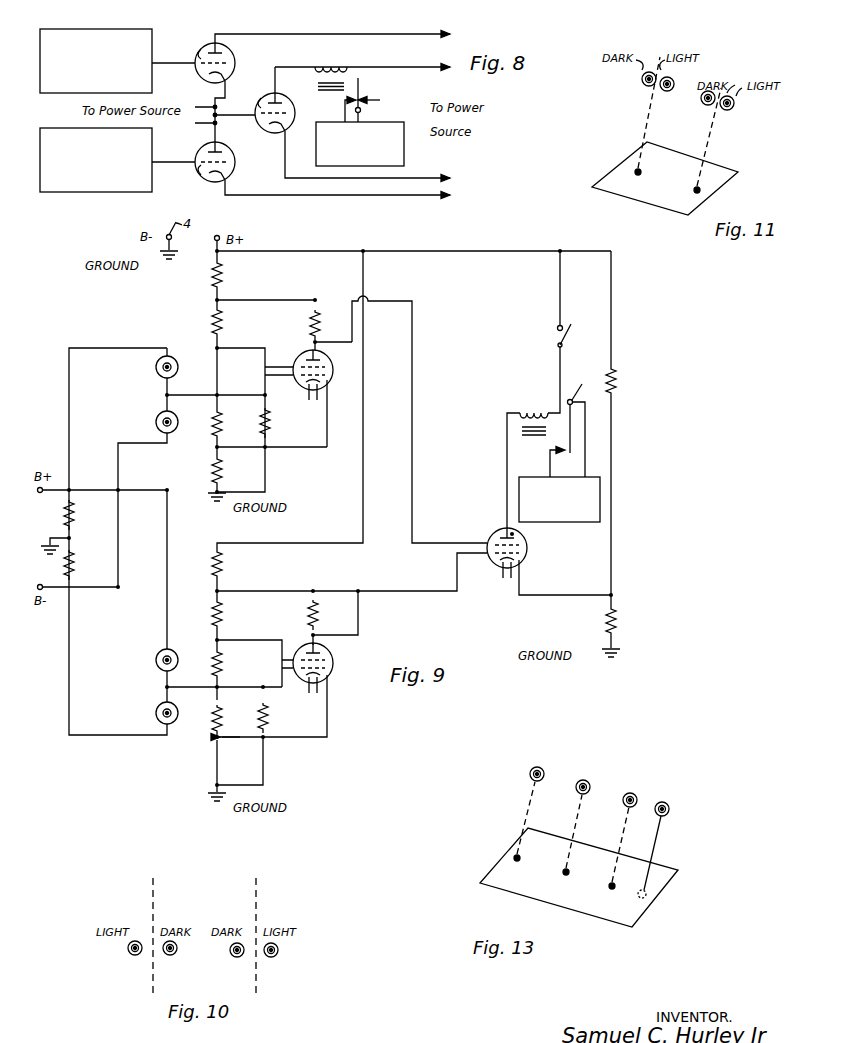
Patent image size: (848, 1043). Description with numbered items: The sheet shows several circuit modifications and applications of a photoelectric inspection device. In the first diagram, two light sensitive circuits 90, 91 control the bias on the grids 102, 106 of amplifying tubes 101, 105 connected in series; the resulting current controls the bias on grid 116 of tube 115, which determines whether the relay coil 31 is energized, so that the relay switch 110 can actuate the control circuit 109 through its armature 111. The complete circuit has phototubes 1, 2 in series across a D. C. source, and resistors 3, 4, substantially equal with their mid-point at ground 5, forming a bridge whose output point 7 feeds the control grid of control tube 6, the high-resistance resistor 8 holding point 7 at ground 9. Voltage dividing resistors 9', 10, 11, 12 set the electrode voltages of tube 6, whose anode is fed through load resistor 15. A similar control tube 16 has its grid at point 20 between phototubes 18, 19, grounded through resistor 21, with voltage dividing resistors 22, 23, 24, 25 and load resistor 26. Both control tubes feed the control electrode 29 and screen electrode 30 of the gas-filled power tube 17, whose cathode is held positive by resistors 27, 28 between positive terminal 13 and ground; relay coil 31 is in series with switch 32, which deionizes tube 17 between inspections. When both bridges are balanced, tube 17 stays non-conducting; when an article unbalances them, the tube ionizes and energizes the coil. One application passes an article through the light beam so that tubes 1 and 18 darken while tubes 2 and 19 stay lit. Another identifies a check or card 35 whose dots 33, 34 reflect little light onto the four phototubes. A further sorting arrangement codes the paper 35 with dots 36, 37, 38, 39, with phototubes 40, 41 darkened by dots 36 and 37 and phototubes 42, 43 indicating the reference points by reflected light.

In FIG. 8, the light sensitive circuit 90 is at (132, 29).
In FIG. 8, the light sensitive circuit 91 is at (79, 190).
In FIG. 8, the amplifying tube 101 is at (234, 54).
In FIG. 8, the grid 102 is at (201, 49).
In FIG. 8, the amplifying tube 105 is at (231, 167).
In FIG. 8, the grid 106 is at (200, 171).
In FIG. 8, the tube 115 is at (292, 107).
In FIG. 8, the grid 116 is at (261, 99).
In FIG. 8, the relay coil 31 is at (337, 50).
In FIG. 9, the relay coil 31 is at (539, 398).
In FIG. 8, the relay switch 110 is at (364, 108).
In FIG. 9, the relay switch 110 is at (574, 393).
In FIG. 8, the control circuit 109 is at (316, 148).
In FIG. 9, the control circuit 109 is at (552, 528).
In FIG. 9, the relay armature 111 is at (547, 452).
In FIG. 9, the positive terminal 13 is at (215, 238).
In FIG. 9, the resistor 4 is at (72, 565).
In FIG. 9, the voltage dividing resistor 9' is at (230, 276).
In FIG. 9, the voltage dividing resistor 10 is at (221, 325).
In FIG. 9, the phototube 1 is at (177, 361).
In FIG. 11, the phototube 1 is at (642, 86).
In FIG. 10, the phototube 1 is at (167, 955).
In FIG. 9, the phototube 2 is at (177, 423).
In FIG. 11, the phototube 2 is at (667, 91).
In FIG. 10, the phototube 2 is at (132, 956).
In FIG. 9, the point 7 is at (169, 395).
In FIG. 9, the voltage dividing resistor 11 is at (221, 420).
In FIG. 9, the resistor 8 is at (269, 420).
In FIG. 9, the voltage dividing resistor 12 is at (220, 464).
In FIG. 9, the ground 9 is at (205, 495).
In FIG. 9, the resistor 3 is at (72, 516).
In FIG. 9, the ground 5 is at (51, 539).
In FIG. 9, the load resistor 15 is at (318, 323).
In FIG. 9, the control tube 6 is at (325, 354).
In FIG. 9, the voltage dividing resistor 22 is at (220, 566).
In FIG. 9, the voltage dividing resistor 23 is at (220, 616).
In FIG. 9, the voltage dividing resistor 24 is at (220, 665).
In FIG. 9, the load resistor 26 is at (317, 613).
In FIG. 9, the control tube 16 is at (325, 654).
In FIG. 9, the voltage dividing resistor 25 is at (220, 722).
In FIG. 9, the resistor 21 is at (271, 717).
In FIG. 9, the phototube 18 is at (175, 656).
In FIG. 11, the phototube 18 is at (705, 105).
In FIG. 10, the phototube 18 is at (230, 957).
In FIG. 9, the point 20 is at (169, 687).
In FIG. 9, the phototube 19 is at (175, 709).
In FIG. 11, the phototube 19 is at (727, 110).
In FIG. 10, the phototube 19 is at (267, 957).
In FIG. 9, the switch 32 is at (555, 334).
In FIG. 9, the voltage dividing resistor 27 is at (614, 383).
In FIG. 9, the voltage dividing resistor 28 is at (614, 622).
In FIG. 9, the power tube 17 is at (501, 523).
In FIG. 9, the screen electrode 30 is at (492, 538).
In FIG. 9, the control electrode 29 is at (492, 565).
In FIG. 11, the dot 33 is at (636, 176).
In FIG. 11, the dot 34 is at (695, 194).
In FIG. 11, the article 35 is at (664, 191).
In FIG. 13, the article 35 is at (553, 861).
In FIG. 13, the dot 36 is at (517, 862).
In FIG. 13, the dot 37 is at (566, 875).
In FIG. 13, the light spot 38 is at (612, 888).
In FIG. 13, the light spot 39 is at (640, 897).
In FIG. 13, the phototube 40 is at (538, 767).
In FIG. 13, the phototube 41 is at (584, 780).
In FIG. 13, the phototube 42 is at (630, 793).
In FIG. 13, the phototube 43 is at (671, 792).